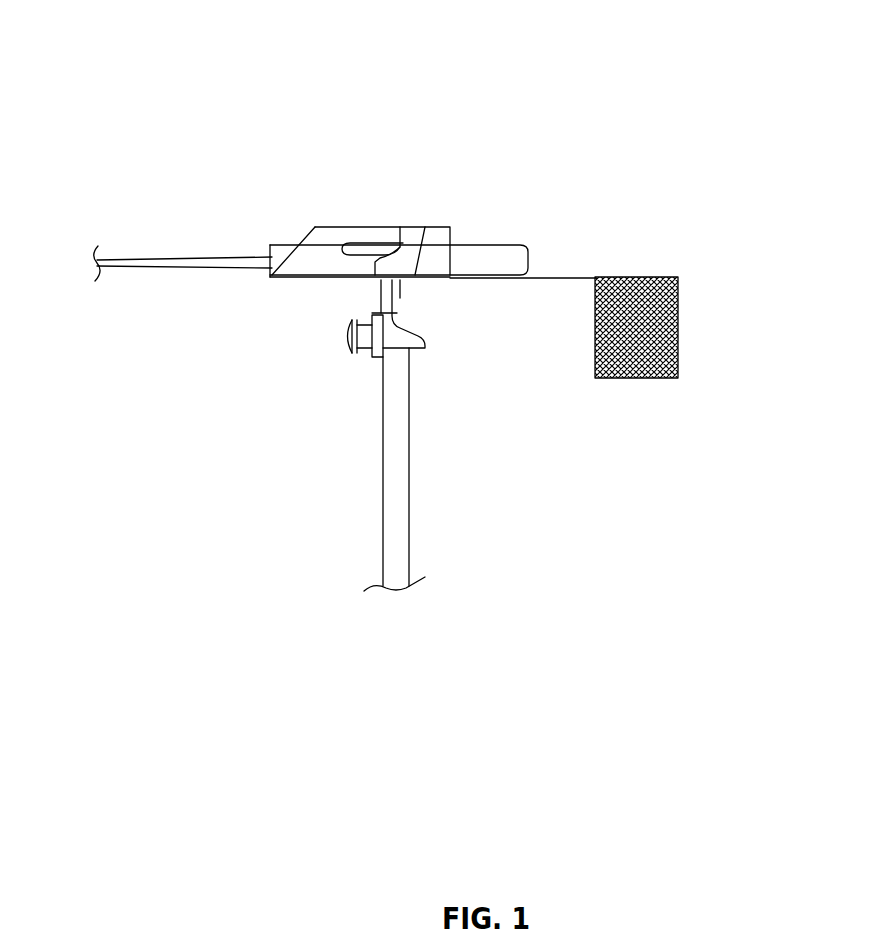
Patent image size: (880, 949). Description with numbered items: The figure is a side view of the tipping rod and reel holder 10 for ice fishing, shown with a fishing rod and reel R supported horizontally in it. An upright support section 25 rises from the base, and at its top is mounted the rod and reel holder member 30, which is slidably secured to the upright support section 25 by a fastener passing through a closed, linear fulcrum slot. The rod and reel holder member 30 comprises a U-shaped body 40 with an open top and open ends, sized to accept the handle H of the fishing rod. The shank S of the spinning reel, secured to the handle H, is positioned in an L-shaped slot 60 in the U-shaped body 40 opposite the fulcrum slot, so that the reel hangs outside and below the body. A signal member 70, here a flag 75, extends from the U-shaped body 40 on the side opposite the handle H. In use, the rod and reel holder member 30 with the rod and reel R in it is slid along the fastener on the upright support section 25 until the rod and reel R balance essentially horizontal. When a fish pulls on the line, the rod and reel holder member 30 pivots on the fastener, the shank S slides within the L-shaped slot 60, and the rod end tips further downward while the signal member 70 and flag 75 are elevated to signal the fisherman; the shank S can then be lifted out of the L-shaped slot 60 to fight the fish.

The tipping rod and reel holder 10 is at (185, 458).
The fishing rod and reel R is at (283, 226).
The rod and reel holder member 30 is at (332, 190).
The handle H is at (500, 243).
The L-shaped slot 60 is at (413, 228).
The signal member 70 is at (627, 227).
The flag 75 is at (672, 380).
The U-shaped body 40 is at (300, 275).
The shank S is at (401, 302).
The upright support section 25 is at (395, 497).